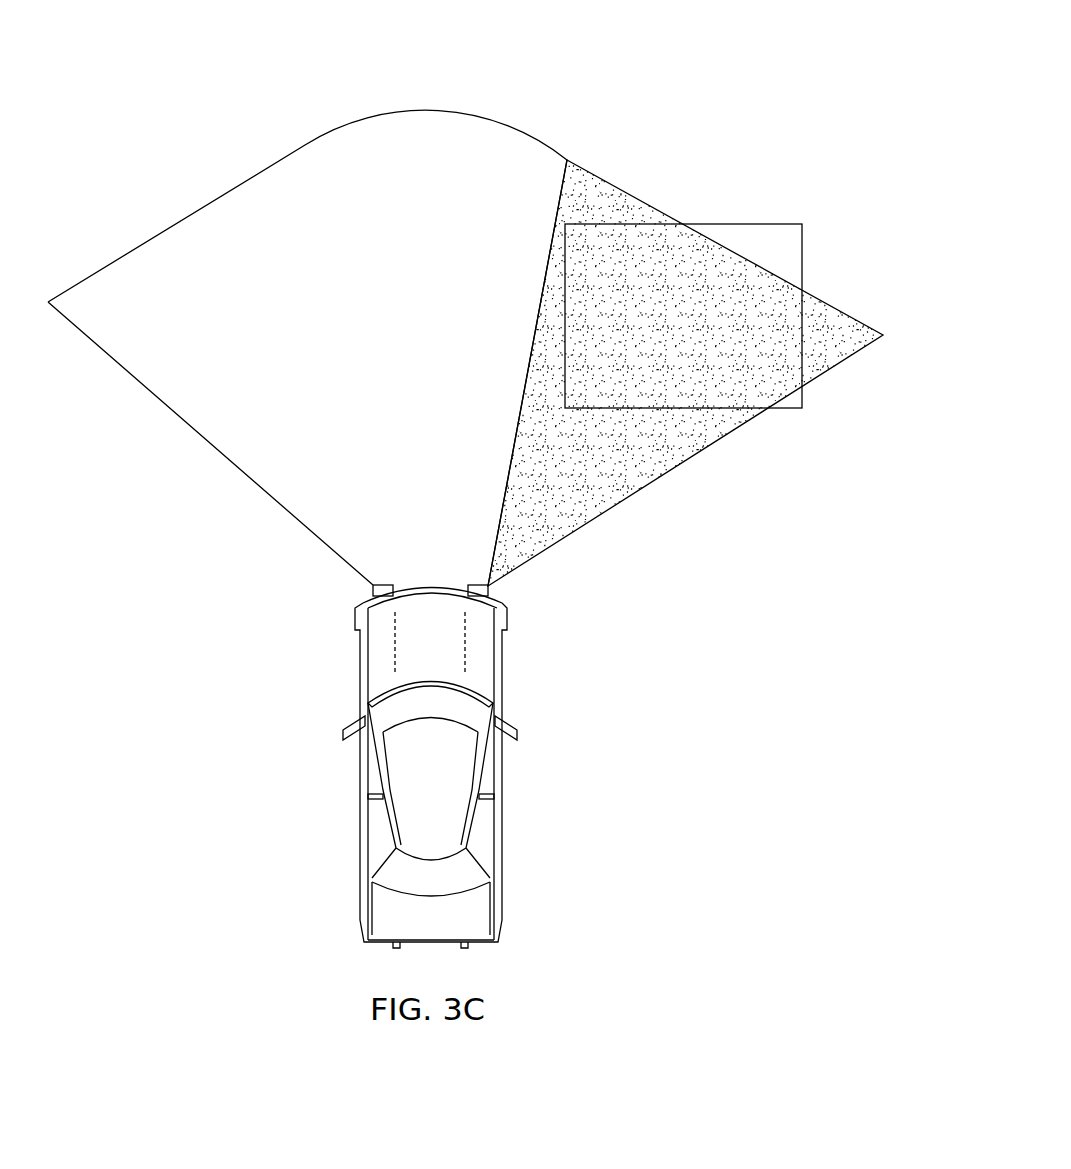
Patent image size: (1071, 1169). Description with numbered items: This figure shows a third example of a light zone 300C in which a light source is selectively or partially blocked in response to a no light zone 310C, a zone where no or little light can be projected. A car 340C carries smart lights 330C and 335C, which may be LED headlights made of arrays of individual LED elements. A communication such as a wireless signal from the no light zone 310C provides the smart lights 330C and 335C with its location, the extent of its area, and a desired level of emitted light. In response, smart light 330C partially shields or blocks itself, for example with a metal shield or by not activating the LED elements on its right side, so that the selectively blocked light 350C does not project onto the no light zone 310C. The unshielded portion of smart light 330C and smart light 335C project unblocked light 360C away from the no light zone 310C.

The third example of a light zone 300C is at (682, 70).
The no light zone 310C is at (762, 240).
The smart light 330C is at (490, 594).
The smart light 335C is at (373, 586).
The car 340C is at (500, 822).
The selectively blocked light 350C is at (668, 459).
The unblocked light 360C is at (243, 432).